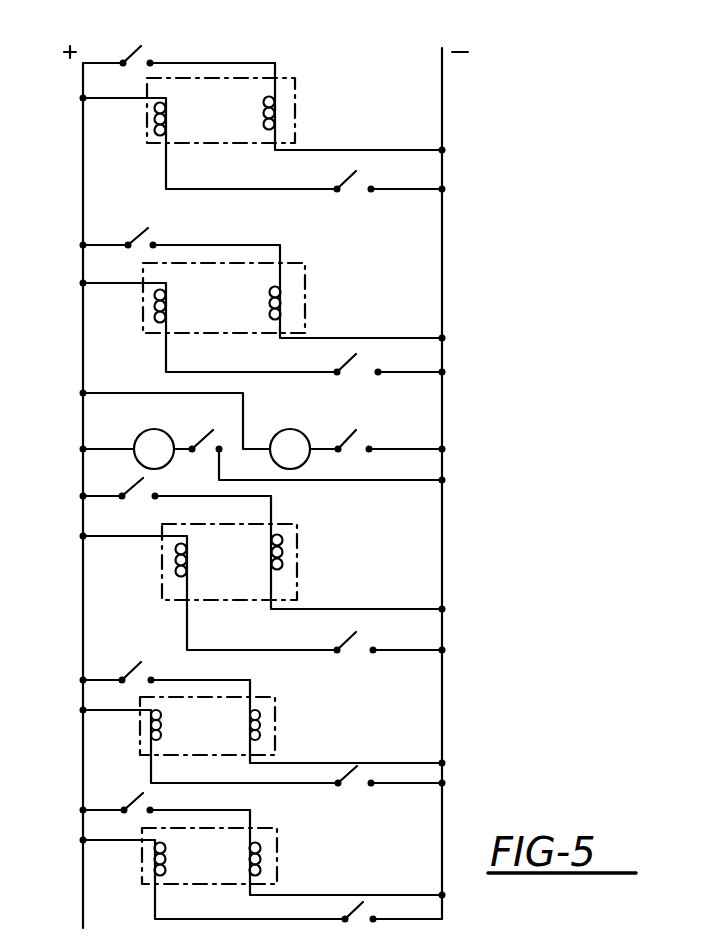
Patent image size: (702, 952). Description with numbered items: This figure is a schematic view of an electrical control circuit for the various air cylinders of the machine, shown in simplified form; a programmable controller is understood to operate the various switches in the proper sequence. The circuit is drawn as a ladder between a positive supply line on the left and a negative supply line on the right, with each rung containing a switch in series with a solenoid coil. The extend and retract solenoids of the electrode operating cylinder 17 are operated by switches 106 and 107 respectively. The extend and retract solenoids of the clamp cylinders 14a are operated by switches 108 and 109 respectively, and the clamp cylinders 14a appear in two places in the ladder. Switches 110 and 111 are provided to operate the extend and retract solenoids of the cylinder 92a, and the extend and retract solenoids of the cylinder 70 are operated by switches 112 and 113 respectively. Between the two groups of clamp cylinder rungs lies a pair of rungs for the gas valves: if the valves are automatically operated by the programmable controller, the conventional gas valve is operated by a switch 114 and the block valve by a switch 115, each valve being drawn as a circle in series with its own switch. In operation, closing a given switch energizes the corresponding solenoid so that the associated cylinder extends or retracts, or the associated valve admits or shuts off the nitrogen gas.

The switch 106 is at (141, 47).
The electrode operating cylinder 17 is at (296, 106).
The switch 107 is at (356, 171).
The clamp cylinder 14a is at (305, 320).
The switch 109 is at (356, 354).
The switch 114 is at (356, 431).
The switch 115 is at (213, 430).
The switch 108 is at (143, 478).
The switch 110 is at (141, 662).
The cylinder 92a is at (280, 748).
The switch 111 is at (357, 768).
The switch 112 is at (143, 793).
The cylinder 70 is at (278, 875).
The switch 113 is at (363, 902).